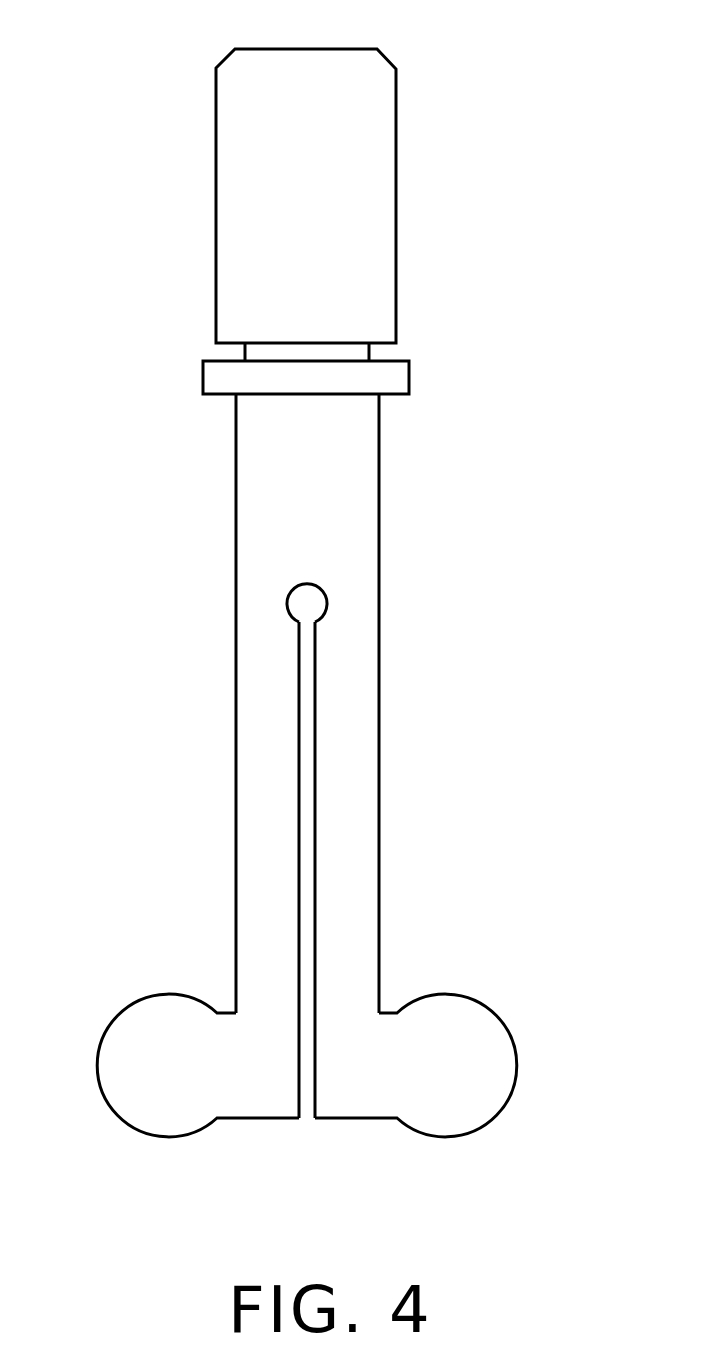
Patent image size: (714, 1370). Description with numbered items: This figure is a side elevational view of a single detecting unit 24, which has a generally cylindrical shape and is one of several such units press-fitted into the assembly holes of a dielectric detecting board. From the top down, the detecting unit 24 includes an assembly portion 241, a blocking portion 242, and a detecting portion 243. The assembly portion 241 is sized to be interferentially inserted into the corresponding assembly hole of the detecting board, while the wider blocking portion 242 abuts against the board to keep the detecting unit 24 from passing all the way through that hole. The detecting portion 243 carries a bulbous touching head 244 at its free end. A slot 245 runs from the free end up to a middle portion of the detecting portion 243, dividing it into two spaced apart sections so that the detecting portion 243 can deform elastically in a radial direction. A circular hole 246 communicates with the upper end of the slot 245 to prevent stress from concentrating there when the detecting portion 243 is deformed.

The detecting unit 24 is at (214, 61).
The assembly portion 241 is at (358, 207).
The blocking portion 242 is at (370, 379).
The detecting portion 243 is at (352, 539).
The bulbous touching head 244 is at (378, 1052).
The slot 245 is at (307, 852).
The circular hole 246 is at (306, 607).